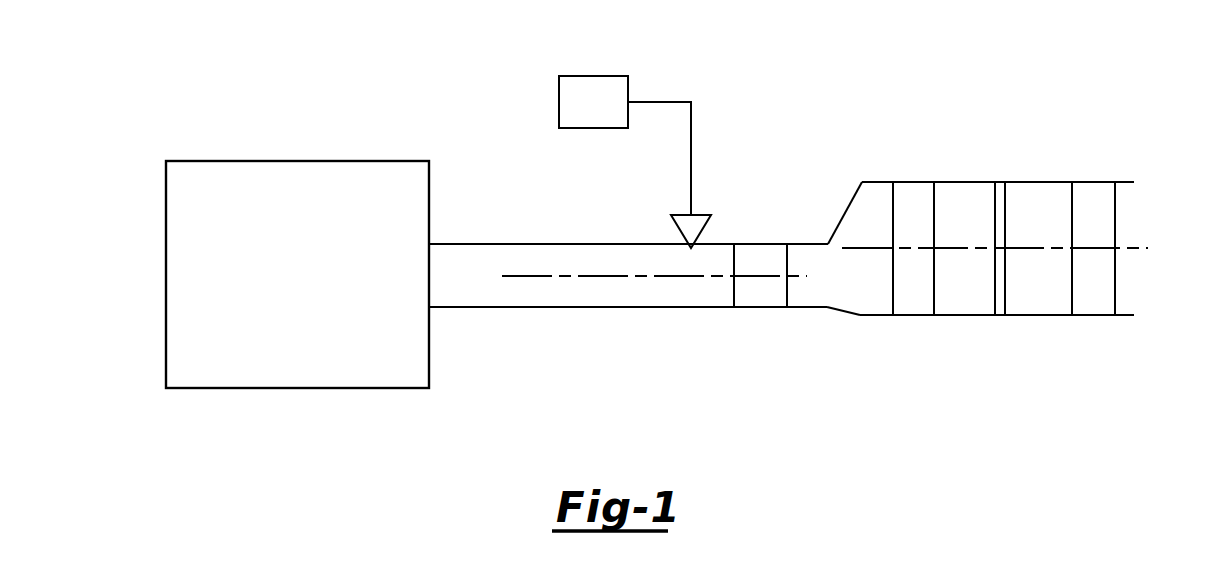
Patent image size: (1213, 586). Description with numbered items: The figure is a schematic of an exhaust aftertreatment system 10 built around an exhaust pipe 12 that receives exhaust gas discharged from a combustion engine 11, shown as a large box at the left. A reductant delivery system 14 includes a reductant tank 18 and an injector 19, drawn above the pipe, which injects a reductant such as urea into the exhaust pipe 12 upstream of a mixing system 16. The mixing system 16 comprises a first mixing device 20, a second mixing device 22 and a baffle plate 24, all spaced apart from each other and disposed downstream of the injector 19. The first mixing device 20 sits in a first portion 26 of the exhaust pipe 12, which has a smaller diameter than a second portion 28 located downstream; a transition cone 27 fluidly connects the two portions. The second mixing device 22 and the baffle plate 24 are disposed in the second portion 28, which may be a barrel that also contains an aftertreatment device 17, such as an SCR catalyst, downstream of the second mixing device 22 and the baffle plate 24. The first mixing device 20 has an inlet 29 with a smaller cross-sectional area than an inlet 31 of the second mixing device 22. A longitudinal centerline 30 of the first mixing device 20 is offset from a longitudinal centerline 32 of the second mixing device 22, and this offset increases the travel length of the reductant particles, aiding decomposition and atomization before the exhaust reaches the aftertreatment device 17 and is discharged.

The exhaust aftertreatment system 10 is at (896, 58).
The combustion engine 11 is at (296, 161).
The exhaust pipe 12 is at (591, 312).
The reductant delivery system 14 is at (718, 90).
The mixing system 16 is at (843, 352).
The aftertreatment device 17 is at (1103, 307).
The reductant tank 18 is at (576, 76).
The injector 19 is at (681, 215).
The first mixing device 20 is at (751, 298).
The second mixing device 22 is at (910, 300).
The baffle plate 24 is at (999, 308).
The first portion 26 is at (645, 308).
The transition cone 27 is at (850, 198).
The second portion 28 is at (960, 181).
The inlet 29 is at (733, 283).
The longitudinal centerline 30 is at (573, 276).
The inlet 31 is at (893, 293).
The longitudinal centerline 32 is at (1128, 248).